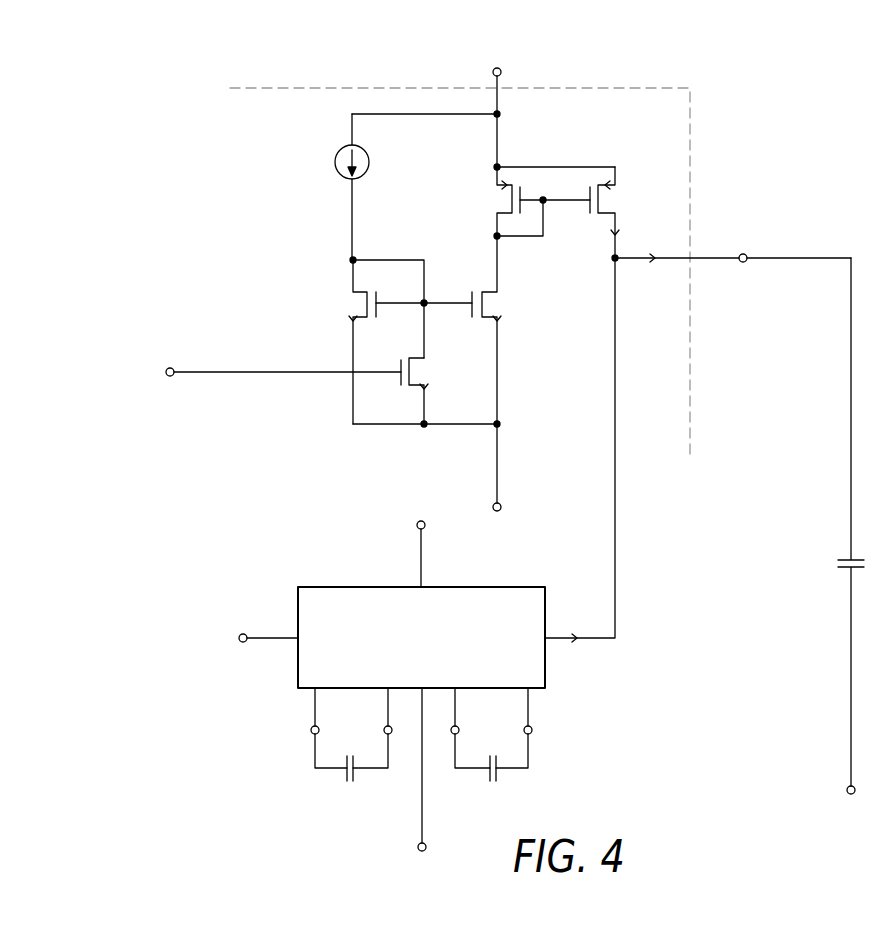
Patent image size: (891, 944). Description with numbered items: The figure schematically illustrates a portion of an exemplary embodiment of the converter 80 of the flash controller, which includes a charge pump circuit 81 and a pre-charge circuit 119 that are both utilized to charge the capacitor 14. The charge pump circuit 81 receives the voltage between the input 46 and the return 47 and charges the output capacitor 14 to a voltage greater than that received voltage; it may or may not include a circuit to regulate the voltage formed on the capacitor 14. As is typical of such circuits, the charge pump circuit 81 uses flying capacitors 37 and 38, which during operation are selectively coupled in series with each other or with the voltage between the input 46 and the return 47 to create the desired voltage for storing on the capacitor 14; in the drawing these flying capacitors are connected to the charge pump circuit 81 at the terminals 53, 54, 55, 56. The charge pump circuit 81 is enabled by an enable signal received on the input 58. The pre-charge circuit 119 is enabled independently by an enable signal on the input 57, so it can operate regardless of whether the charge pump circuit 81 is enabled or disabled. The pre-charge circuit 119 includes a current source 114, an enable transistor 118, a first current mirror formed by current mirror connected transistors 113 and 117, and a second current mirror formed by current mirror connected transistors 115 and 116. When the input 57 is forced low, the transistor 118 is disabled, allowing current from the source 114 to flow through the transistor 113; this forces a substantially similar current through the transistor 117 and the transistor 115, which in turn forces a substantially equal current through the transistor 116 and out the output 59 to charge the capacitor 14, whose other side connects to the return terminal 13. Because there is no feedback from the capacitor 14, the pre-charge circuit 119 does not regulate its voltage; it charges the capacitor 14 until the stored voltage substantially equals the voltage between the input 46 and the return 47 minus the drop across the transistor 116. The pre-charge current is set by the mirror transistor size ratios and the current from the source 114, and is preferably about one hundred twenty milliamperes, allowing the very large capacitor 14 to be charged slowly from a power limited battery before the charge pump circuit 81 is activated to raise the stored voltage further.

The return terminal 13 is at (845, 791).
The capacitor 14 is at (838, 563).
The flying capacitor 37 is at (350, 785).
The flying capacitor 38 is at (493, 785).
The input 46 is at (502, 68).
The return 47 is at (493, 512).
The charge pump terminal 53 is at (311, 731).
The charge pump terminal 54 is at (384, 727).
The charge pump terminal 55 is at (459, 727).
The charge pump terminal 56 is at (533, 731).
The input 57 is at (168, 378).
The input 58 is at (242, 645).
The output 59 is at (745, 252).
The converter 80 is at (398, 714).
The charge pump circuit 81 is at (297, 608).
The transistor 113 is at (350, 302).
The current source 114 is at (335, 164).
The transistor 115 is at (492, 200).
The transistor 116 is at (613, 200).
The transistor 117 is at (498, 303).
The enable transistor 118 is at (425, 375).
The pre-charge circuit 119 is at (230, 438).